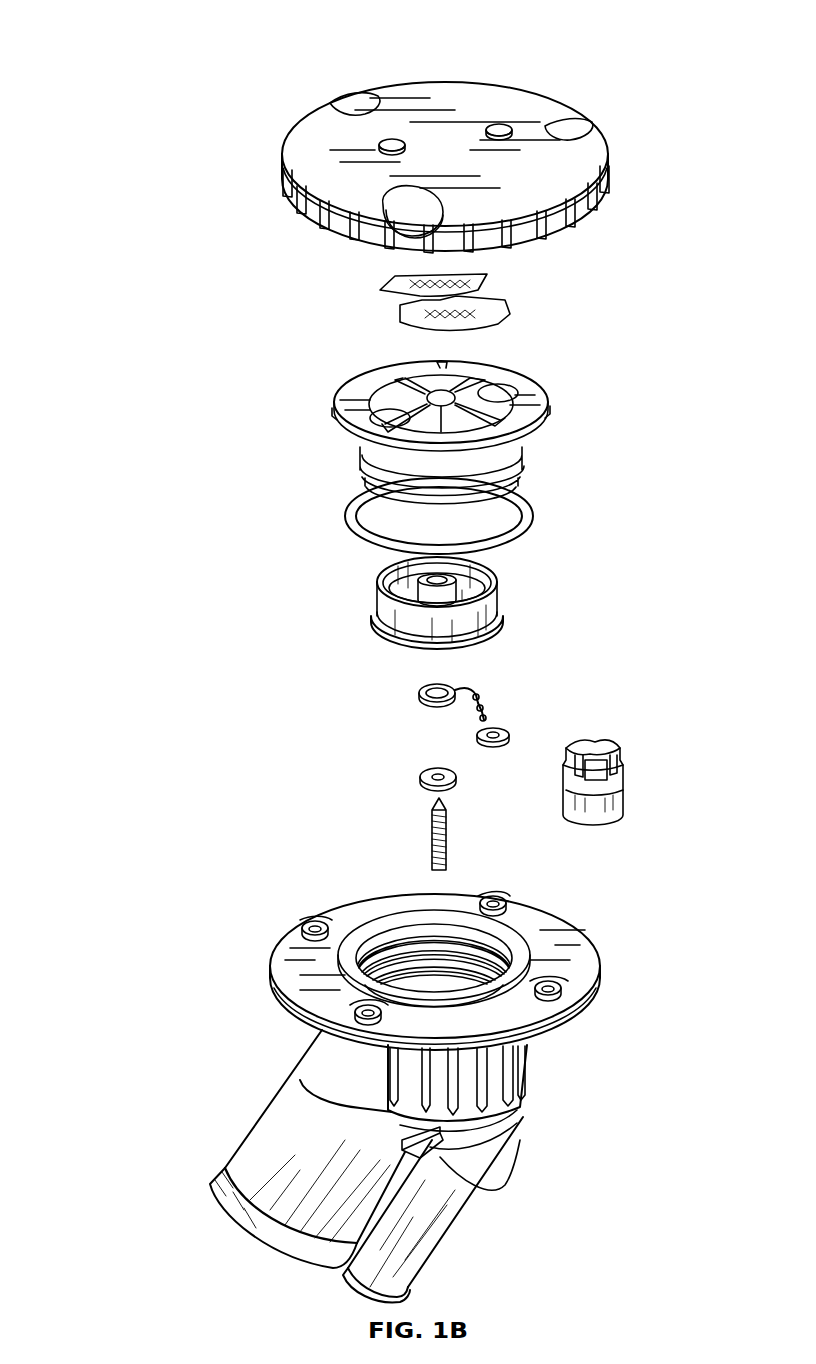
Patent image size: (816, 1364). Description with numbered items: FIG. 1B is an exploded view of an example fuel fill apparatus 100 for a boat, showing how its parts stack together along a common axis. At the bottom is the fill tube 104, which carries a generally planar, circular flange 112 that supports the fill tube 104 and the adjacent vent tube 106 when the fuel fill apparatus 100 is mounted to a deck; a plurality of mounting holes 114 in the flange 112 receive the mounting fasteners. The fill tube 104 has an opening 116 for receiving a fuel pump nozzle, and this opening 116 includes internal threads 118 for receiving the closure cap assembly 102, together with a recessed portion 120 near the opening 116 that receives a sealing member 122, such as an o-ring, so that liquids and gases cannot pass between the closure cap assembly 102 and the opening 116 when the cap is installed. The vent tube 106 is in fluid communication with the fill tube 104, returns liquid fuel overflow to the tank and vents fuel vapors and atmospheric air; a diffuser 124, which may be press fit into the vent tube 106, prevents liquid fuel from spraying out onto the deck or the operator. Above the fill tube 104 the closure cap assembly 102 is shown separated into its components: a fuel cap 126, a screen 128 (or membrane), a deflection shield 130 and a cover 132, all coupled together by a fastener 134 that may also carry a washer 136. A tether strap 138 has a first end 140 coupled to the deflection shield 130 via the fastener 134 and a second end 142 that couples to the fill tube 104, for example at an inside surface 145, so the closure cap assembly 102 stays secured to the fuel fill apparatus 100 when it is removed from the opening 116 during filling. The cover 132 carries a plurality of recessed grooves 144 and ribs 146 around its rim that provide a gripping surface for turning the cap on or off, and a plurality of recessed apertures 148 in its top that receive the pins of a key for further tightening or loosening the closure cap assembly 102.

The fuel fill apparatus 100 is at (122, 42).
The closure cap assembly 102 is at (680, 102).
The fill tube 104 is at (250, 1132).
The vent tube 106 is at (468, 1222).
The flange 112 is at (598, 972).
The mounting holes 114 is at (318, 924).
The opening 116 is at (490, 990).
The internal threads 118 is at (468, 950).
The recessed portion 120 is at (507, 940).
The sealing member 122 is at (533, 506).
The diffuser 124 is at (595, 740).
The fuel cap 126 is at (341, 428).
The screen 128 is at (504, 320).
The deflection shield 130 is at (376, 596).
The cover 132 is at (305, 131).
The fastener 134 is at (432, 839).
The washer 136 is at (420, 777).
The tether strap 138 is at (488, 700).
The first end 140 is at (420, 691).
The second end 142 is at (478, 734).
The recessed grooves 144 is at (378, 107).
The inside surface 145 is at (413, 985).
The ribs 146 is at (296, 201).
The recessed apertures 148 is at (393, 140).